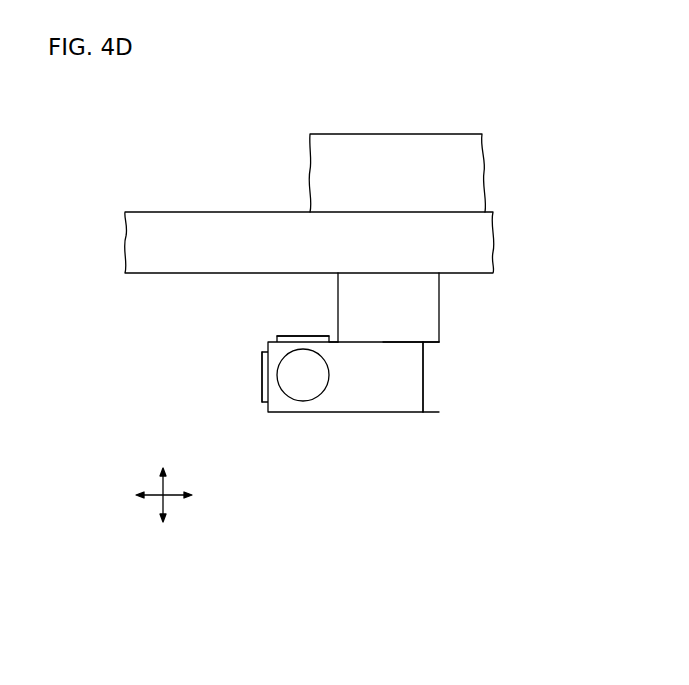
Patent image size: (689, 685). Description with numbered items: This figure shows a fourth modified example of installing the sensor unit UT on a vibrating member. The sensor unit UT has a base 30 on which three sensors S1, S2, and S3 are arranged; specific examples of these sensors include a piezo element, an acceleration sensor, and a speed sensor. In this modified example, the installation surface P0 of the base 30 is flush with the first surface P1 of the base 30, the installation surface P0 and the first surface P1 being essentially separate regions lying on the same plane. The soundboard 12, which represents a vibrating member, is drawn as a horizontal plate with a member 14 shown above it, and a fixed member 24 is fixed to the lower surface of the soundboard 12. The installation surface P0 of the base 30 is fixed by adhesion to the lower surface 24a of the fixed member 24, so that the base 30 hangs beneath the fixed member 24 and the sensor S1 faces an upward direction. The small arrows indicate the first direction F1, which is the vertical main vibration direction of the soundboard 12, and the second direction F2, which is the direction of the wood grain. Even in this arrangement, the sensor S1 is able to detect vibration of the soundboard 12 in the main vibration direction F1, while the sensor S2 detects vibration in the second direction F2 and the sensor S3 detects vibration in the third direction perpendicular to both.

The soundboard 12 is at (235, 227).
The upper member 14 is at (410, 150).
The fixed member 24 is at (432, 300).
The lower surface of fixed member 24a is at (403, 345).
The base 30 is at (268, 413).
The installation surface P0 is at (383, 342).
The first surface P1 is at (331, 337).
The sensor S1 is at (276, 337).
The sensor S2 is at (262, 377).
The sensor S3 is at (304, 388).
The sensor unit UT is at (425, 413).
The first direction F1 is at (164, 480).
The second direction F2 is at (146, 497).